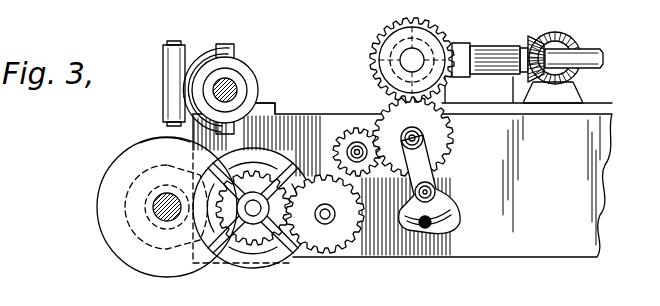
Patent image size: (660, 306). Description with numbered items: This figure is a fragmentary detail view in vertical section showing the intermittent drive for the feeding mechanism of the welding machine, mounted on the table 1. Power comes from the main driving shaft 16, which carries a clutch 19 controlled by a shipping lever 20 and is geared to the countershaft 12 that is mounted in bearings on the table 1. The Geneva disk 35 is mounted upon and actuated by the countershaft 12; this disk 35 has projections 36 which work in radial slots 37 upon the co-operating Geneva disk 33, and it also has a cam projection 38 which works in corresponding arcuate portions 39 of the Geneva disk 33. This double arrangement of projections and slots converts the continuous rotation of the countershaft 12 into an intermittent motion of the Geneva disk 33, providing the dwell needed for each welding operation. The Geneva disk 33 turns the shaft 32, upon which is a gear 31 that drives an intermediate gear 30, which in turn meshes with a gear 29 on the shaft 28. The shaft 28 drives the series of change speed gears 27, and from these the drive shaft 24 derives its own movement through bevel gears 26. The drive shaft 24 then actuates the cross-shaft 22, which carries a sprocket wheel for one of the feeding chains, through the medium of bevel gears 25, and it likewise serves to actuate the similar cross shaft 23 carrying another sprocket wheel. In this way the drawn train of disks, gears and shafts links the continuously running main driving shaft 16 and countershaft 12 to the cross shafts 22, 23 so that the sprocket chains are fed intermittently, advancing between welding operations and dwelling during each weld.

The table 1 is at (588, 172).
The countershaft 12 is at (152, 204).
The main driving shaft 16 is at (233, 86).
The clutch 19 is at (233, 56).
The shipping lever 20 is at (163, 86).
The cross-shaft 22 is at (557, 48).
The cross shaft 23 is at (412, 60).
The drive shaft 24 is at (598, 54).
The bevel gears 25 is at (541, 40).
The bevel gears 26 is at (422, 42).
The change speed gears 27 is at (376, 38).
The shaft 28 is at (346, 148).
The gear 29 is at (359, 114).
The intermediate gear 30 is at (340, 254).
The gear 31 is at (295, 261).
The shaft 32 is at (248, 210).
The Geneva disk 33 is at (275, 264).
The Geneva disk 35 is at (98, 236).
The projections 36 is at (162, 142).
The radial slots 37 is at (293, 118).
The cam projection 38 is at (140, 184).
The arcuate portions 39 is at (253, 201).